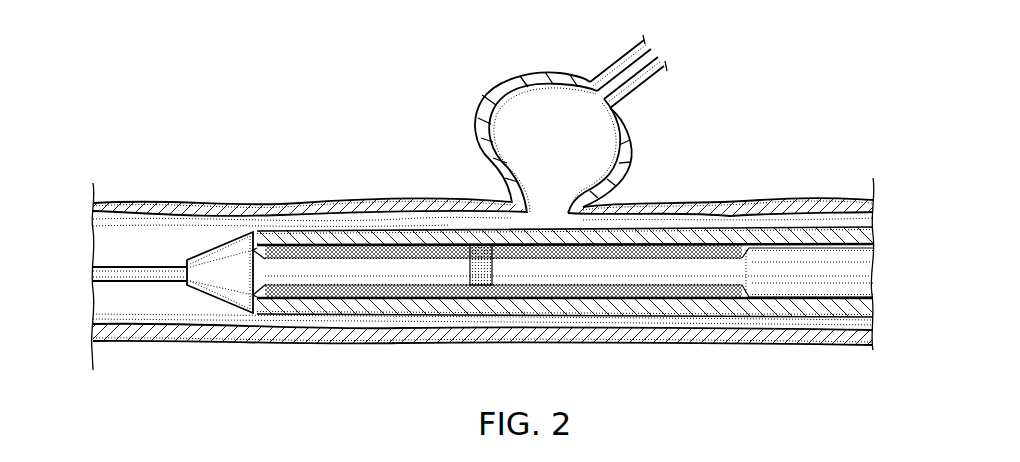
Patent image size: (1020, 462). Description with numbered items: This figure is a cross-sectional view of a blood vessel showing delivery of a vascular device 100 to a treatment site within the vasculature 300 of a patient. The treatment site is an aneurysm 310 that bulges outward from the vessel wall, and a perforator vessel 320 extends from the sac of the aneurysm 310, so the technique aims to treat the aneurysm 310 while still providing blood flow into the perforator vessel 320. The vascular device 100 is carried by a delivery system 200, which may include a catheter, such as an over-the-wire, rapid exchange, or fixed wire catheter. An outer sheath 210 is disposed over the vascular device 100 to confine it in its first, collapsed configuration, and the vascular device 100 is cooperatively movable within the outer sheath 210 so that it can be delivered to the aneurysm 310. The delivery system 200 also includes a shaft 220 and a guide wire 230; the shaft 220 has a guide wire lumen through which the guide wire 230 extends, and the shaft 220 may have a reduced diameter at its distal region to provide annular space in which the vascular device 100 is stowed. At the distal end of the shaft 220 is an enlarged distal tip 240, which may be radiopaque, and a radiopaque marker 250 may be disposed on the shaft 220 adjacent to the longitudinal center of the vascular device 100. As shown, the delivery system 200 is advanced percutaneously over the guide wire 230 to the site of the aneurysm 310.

The vascular device 100 is at (325, 304).
The delivery system 200 is at (99, 240).
The outer sheath 210 is at (332, 220).
The shaft 220 is at (757, 273).
The guide wire 230 is at (106, 290).
The enlarged distal tip 240 is at (198, 308).
The radiopaque marker 250 is at (468, 241).
The vasculature 300 is at (766, 193).
The aneurysm 310 is at (640, 127).
The perforator vessel 320 is at (617, 52).